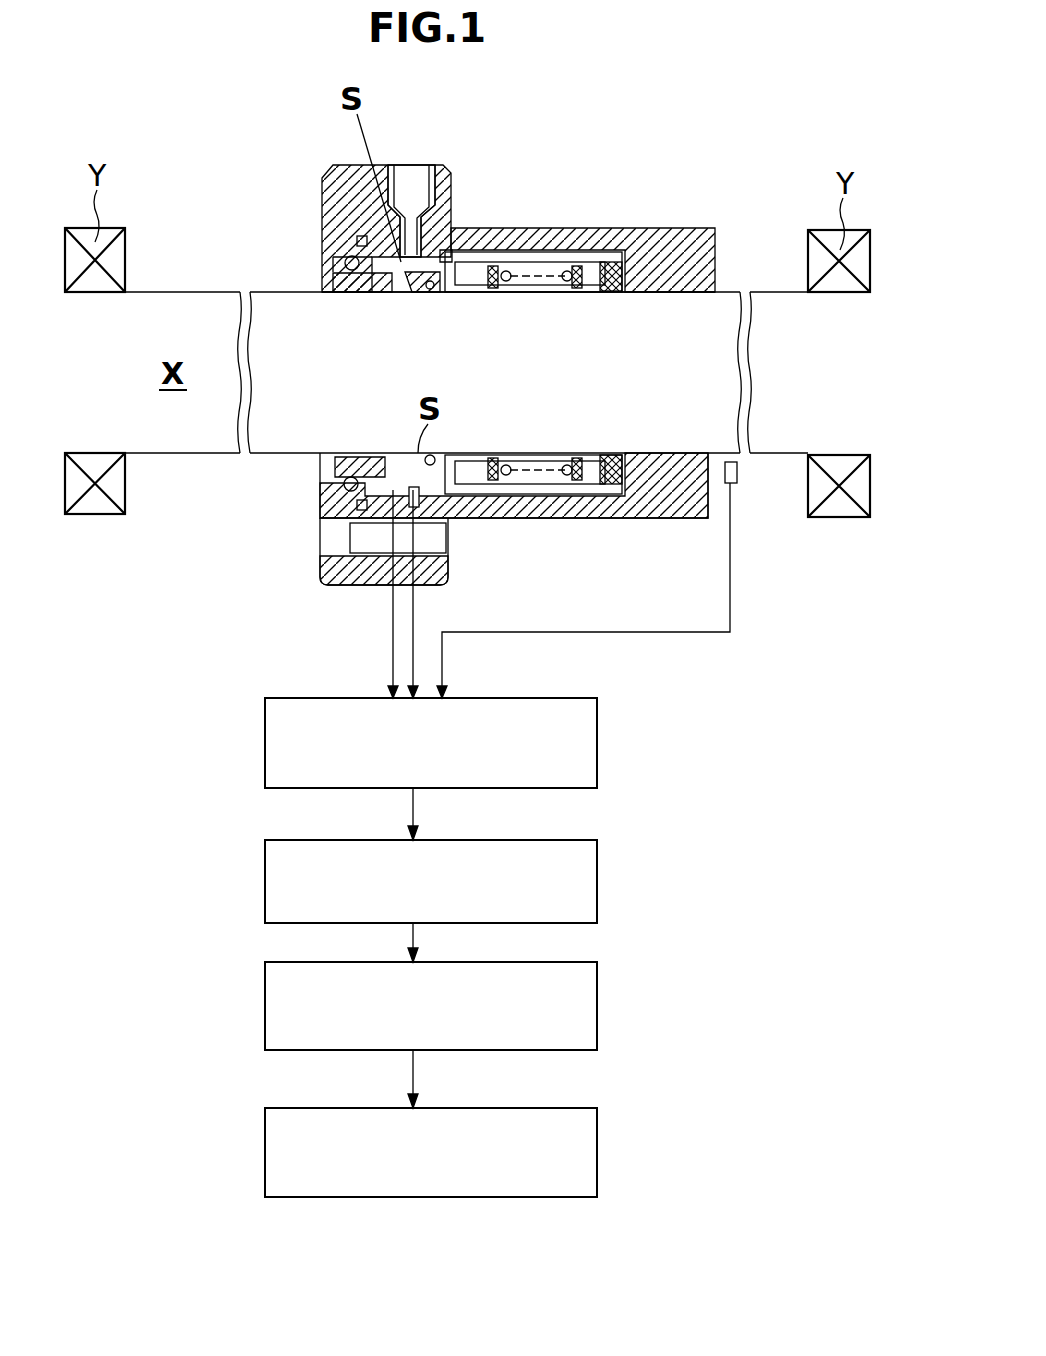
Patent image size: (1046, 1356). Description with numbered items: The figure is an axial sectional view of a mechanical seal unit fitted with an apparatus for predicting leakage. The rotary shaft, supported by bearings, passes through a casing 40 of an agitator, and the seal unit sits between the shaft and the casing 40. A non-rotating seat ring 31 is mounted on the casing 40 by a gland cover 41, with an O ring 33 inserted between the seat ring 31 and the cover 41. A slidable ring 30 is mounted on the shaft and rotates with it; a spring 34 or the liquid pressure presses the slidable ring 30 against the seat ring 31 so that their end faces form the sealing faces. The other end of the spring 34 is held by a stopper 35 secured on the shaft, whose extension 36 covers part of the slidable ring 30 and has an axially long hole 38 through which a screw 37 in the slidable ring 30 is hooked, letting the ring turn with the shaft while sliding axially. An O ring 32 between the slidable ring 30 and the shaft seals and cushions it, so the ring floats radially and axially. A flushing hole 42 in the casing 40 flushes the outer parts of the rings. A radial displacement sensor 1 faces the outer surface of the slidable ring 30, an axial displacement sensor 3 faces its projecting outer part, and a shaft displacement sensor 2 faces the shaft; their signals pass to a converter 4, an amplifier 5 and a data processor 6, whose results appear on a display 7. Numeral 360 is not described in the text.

The radial displacement sensor 1 is at (444, 535).
The shaft displacement sensor 2 is at (736, 471).
The axial displacement sensor 3 is at (385, 453).
The converter 4 is at (590, 752).
The amplifier 5 is at (585, 887).
The data processor 6 is at (590, 1010).
The display 7 is at (575, 1158).
The slidable ring 30 is at (479, 453).
The seat ring 31 is at (330, 465).
The O ring 32 is at (432, 279).
The O ring 33 is at (334, 488).
The spring 34 is at (570, 276).
The stopper 35 is at (596, 455).
The extension 36 is at (540, 496).
The screw 37 is at (493, 275).
The hole 38 is at (542, 277).
The casing 40 is at (690, 255).
The gland cover 41 is at (324, 186).
The flushing hole 42 is at (418, 200).
The spring seat 360 is at (445, 255).